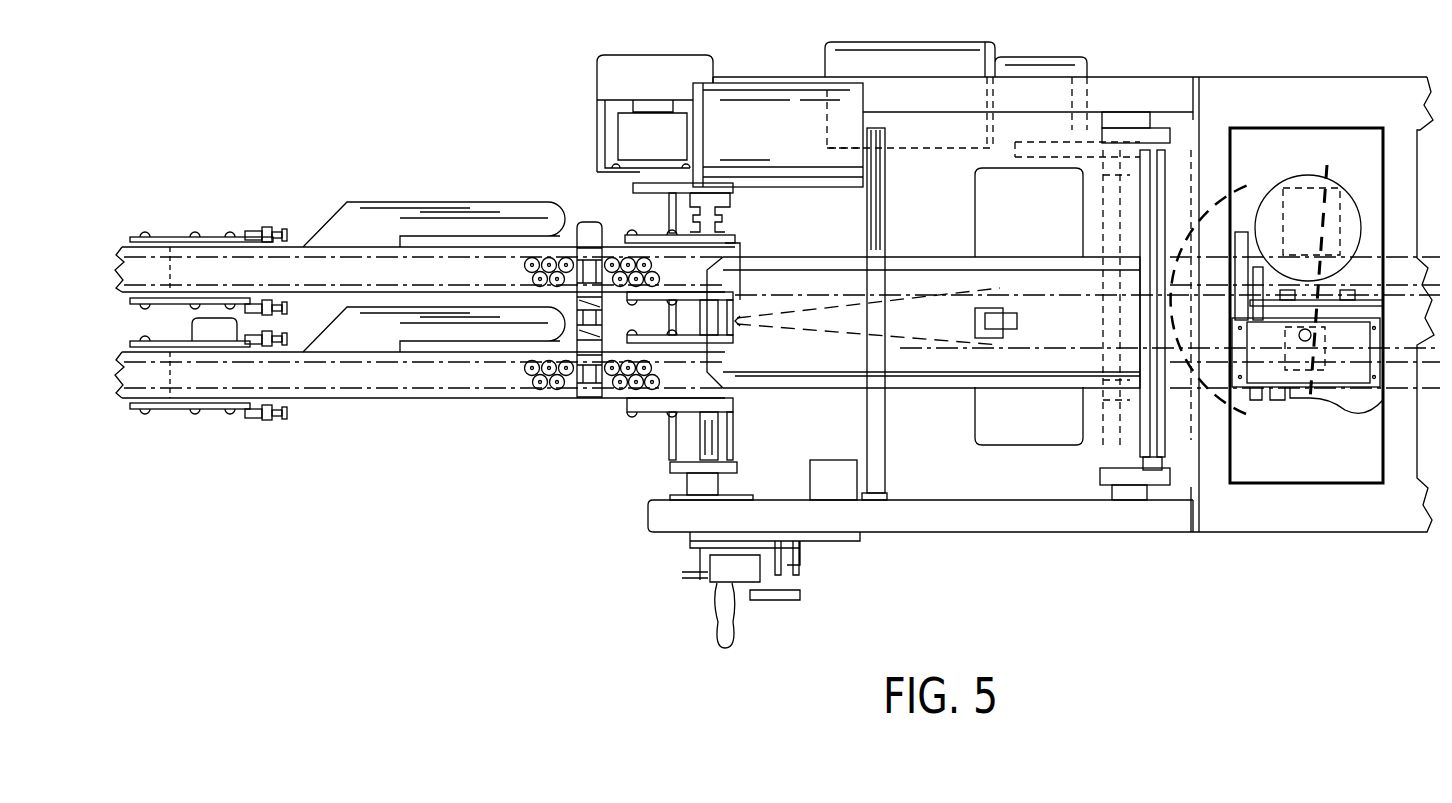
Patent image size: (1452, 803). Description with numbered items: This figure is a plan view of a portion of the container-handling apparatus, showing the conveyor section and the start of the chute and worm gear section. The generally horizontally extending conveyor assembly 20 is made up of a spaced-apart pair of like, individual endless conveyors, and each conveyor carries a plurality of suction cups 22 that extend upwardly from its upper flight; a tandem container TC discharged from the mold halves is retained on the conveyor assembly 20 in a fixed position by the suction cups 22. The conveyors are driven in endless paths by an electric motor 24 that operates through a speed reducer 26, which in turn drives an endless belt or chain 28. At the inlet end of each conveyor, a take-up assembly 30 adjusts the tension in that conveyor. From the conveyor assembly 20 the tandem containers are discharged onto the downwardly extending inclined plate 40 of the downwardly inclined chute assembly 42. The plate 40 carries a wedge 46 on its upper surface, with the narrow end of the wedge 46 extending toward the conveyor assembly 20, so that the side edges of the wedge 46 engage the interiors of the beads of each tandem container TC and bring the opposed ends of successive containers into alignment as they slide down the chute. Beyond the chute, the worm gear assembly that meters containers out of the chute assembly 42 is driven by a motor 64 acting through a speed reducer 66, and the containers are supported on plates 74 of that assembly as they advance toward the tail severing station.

The conveyor assembly 20 is at (370, 400).
The suction cups 22 is at (536, 258).
The electric motor 24 is at (782, 151).
The speed reducer 26 is at (668, 149).
The endless belt 28 is at (640, 195).
The take-up assembly 30 is at (216, 240).
The inclined plate 40 is at (925, 310).
The chute assembly 42 is at (958, 262).
The wedge 46 is at (828, 385).
The motor 64 is at (1325, 241).
The speed reducer 66 is at (1318, 410).
The plates 74 is at (1250, 186).
The tandem container TC is at (591, 398).